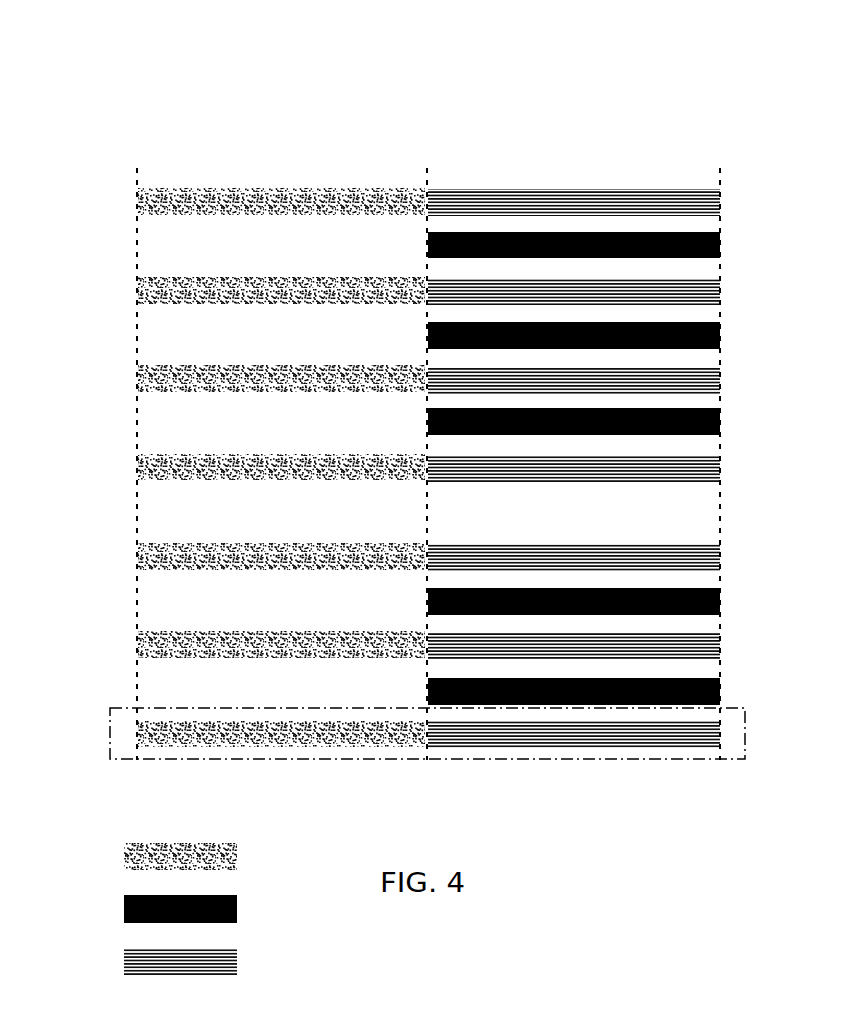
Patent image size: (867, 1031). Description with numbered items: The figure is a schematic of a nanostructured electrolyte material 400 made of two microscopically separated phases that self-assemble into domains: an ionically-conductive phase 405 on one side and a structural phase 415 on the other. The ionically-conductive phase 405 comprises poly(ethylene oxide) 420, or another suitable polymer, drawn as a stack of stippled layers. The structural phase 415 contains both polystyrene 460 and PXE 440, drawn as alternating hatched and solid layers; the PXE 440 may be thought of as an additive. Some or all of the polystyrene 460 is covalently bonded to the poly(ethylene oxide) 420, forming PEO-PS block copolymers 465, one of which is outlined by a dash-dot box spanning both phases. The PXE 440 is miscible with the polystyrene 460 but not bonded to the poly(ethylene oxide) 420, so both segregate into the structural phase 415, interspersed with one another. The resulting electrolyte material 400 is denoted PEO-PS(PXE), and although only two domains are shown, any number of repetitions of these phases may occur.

The electrolyte material 400 is at (175, 126).
The ionically-conductive phase 405 is at (425, 166).
The structural phase 415 is at (720, 166).
The poly(ethylene oxide) 420 is at (149, 858).
The PXE polymers 440 is at (149, 910).
The polystyrene 460 is at (149, 963).
The PEO-PS block copolymers 465 is at (627, 771).